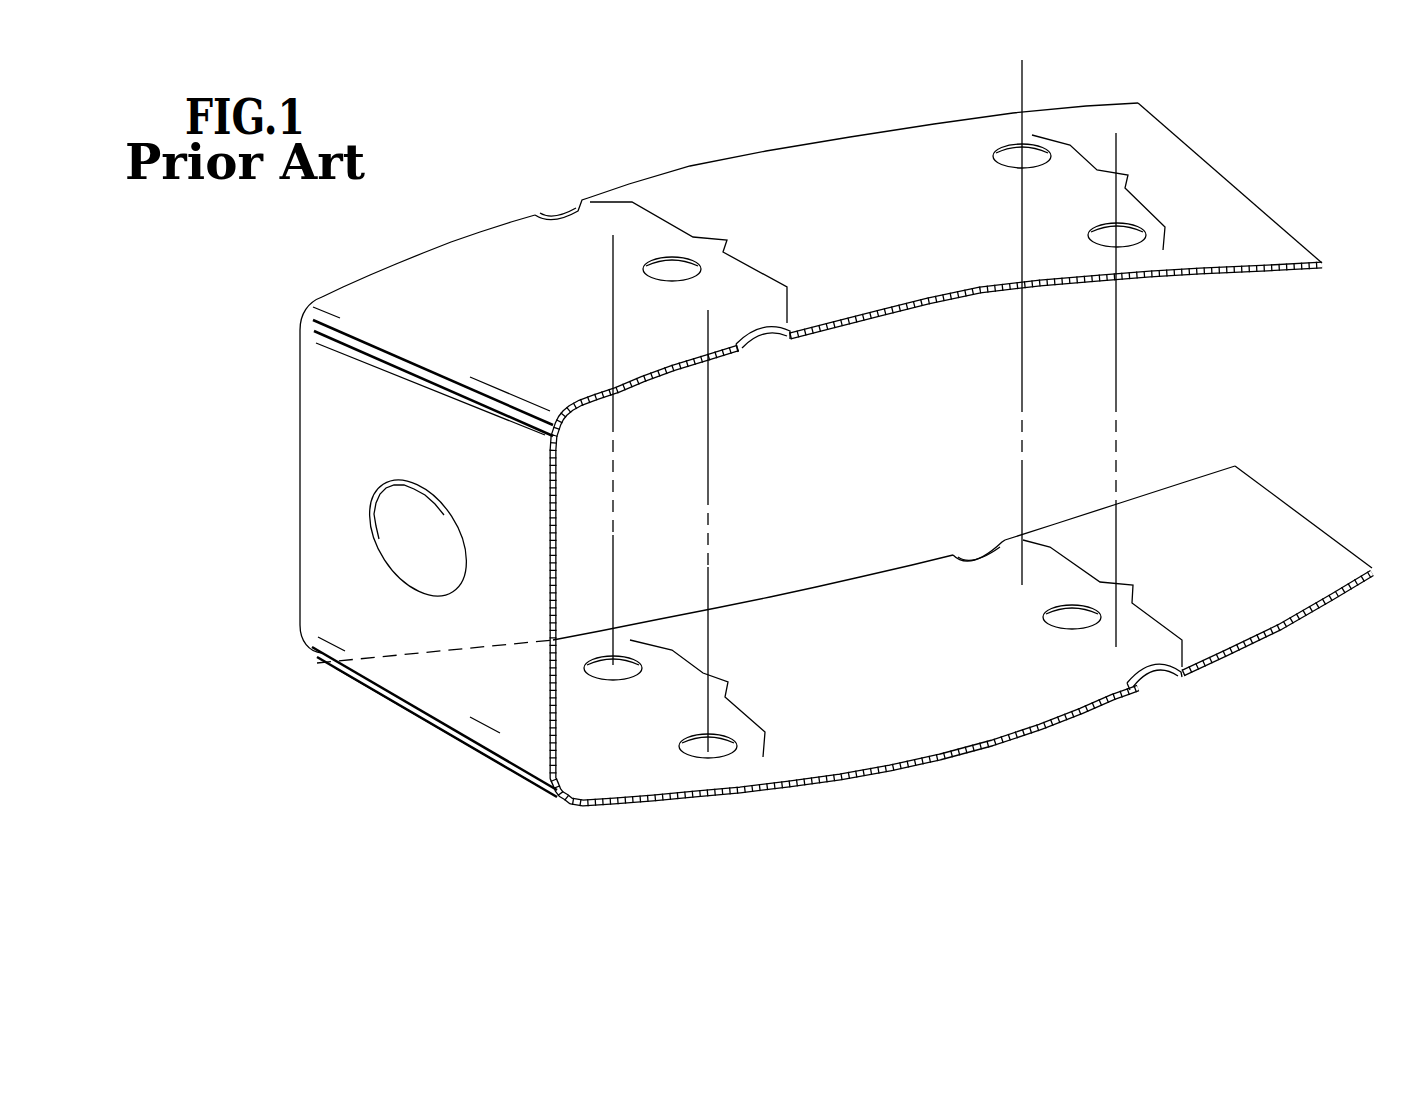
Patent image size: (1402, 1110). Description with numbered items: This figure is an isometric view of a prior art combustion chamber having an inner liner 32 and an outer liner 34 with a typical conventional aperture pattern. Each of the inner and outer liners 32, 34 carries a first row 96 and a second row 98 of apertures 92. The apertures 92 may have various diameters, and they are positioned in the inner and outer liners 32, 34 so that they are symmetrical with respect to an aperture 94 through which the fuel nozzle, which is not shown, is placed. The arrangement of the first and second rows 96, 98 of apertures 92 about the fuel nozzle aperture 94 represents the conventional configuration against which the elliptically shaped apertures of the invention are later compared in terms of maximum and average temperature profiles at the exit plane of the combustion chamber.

The inner liner 32 is at (1192, 183).
The outer liner 34 is at (1272, 527).
The apertures 92 is at (883, 409).
The aperture 94 is at (397, 543).
The first row 96 is at (824, 380).
The second row 98 is at (1218, 313).